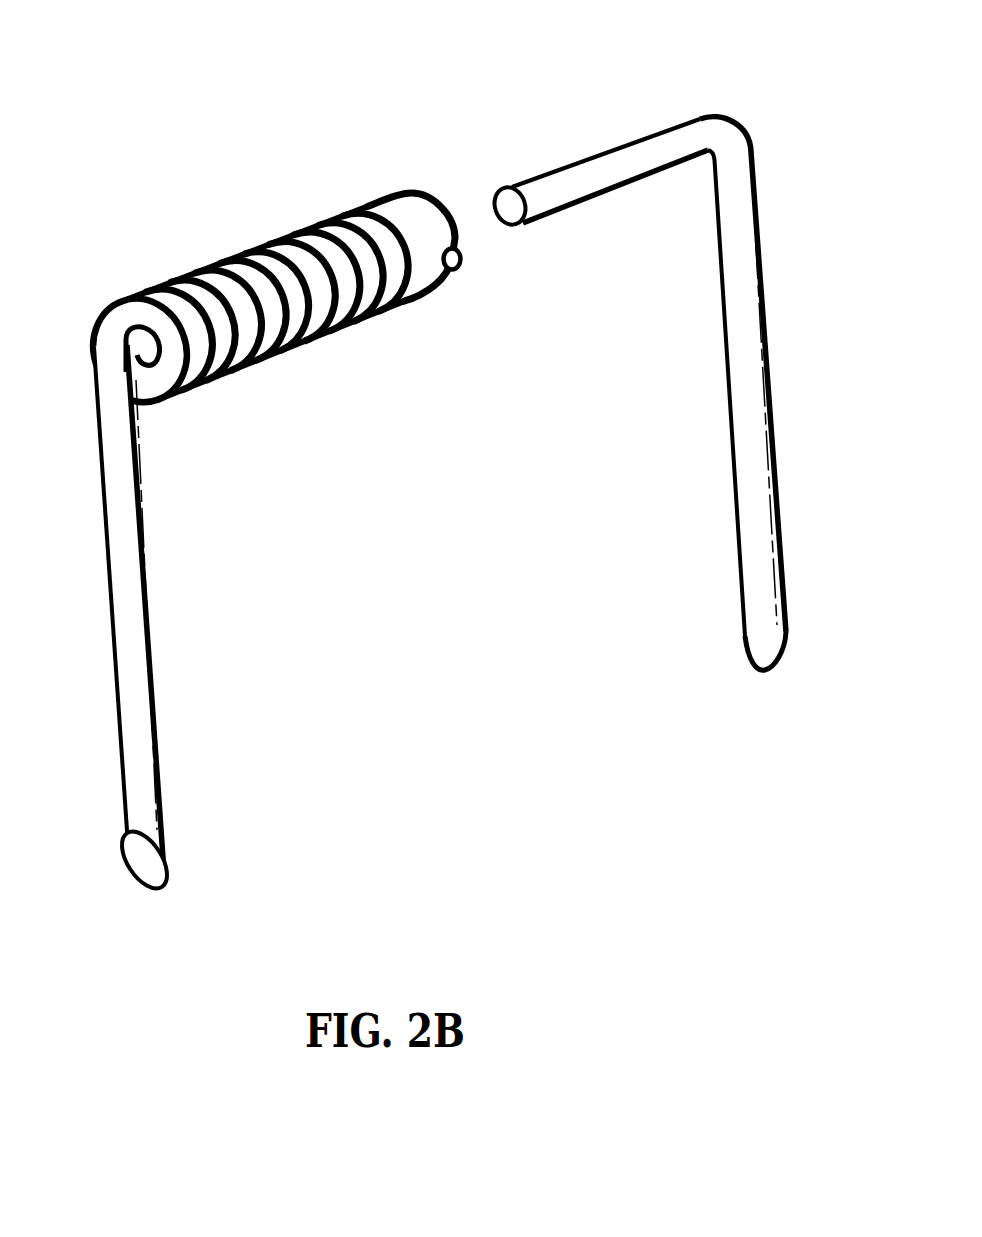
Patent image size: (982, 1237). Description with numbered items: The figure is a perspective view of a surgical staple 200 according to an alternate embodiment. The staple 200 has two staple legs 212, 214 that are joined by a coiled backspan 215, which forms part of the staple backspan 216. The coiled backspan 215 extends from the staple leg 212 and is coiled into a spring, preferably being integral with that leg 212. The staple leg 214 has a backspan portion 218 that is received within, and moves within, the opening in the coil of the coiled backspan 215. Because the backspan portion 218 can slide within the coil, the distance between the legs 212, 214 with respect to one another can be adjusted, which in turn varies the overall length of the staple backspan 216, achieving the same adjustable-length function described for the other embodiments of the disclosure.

The staple 200 is at (500, 78).
The staple leg 212 is at (112, 620).
The staple leg 214 is at (776, 468).
The coiled backspan 215 is at (256, 231).
The staple backspan 216 is at (487, 336).
The backspan portion 218 is at (607, 152).